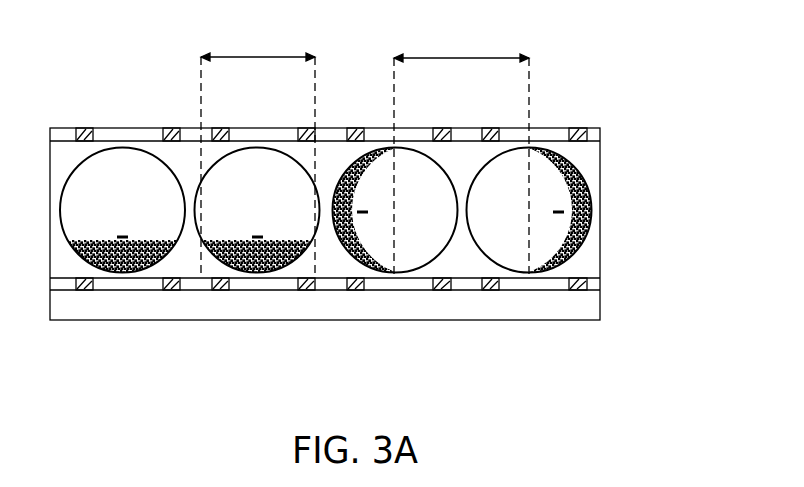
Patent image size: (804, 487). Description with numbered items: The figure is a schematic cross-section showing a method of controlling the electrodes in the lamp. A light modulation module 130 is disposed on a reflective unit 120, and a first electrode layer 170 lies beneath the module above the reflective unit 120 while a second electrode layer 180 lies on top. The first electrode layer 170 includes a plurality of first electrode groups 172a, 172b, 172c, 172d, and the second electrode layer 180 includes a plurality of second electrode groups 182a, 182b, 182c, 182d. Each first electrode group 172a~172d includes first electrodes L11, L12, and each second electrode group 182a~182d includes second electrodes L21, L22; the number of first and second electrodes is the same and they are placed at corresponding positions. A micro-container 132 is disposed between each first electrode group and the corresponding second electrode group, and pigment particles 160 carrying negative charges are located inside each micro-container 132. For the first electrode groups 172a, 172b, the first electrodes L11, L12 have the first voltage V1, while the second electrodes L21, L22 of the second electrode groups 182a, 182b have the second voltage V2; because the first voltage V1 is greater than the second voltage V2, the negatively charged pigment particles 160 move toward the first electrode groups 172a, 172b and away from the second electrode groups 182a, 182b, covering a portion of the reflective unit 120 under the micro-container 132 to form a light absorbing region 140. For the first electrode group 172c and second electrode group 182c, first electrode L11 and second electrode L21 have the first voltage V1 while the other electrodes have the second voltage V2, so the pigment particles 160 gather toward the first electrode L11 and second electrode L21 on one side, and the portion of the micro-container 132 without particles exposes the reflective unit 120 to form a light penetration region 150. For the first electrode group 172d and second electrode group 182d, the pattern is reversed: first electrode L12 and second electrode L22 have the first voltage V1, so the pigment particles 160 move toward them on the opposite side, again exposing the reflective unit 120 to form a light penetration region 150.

The reflective unit 120 is at (594, 303).
The light modulation module 130 is at (598, 198).
The micro-container 132 is at (574, 165).
The light absorbing region 140 is at (258, 153).
The light penetration region 150 is at (461, 153).
The pigment particles 160 is at (582, 241).
The first electrode layer 170 is at (596, 284).
The first electrode group 172a is at (170, 358).
The first electrode group 172b is at (222, 290).
The first electrode group 172c is at (365, 290).
The first electrode group 172d is at (500, 290).
The second electrode layer 180 is at (601, 134).
The second electrode group 182a is at (53, 64).
The second electrode group 182b is at (297, 135).
The second electrode group 182c is at (434, 135).
The second electrode group 182d is at (569, 134).
The first electrode L11 is at (95, 290).
The first electrode L12 is at (163, 290).
The second electrode L21 is at (79, 129).
The second electrode L22 is at (165, 129).
The first voltage V1 is at (333, 211).
The second voltage V2 is at (288, 211).